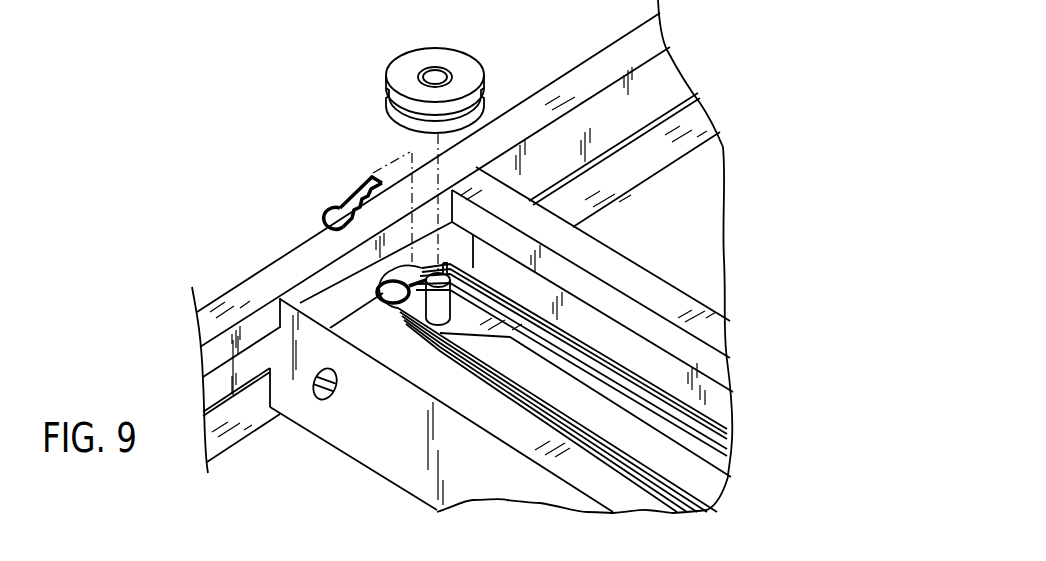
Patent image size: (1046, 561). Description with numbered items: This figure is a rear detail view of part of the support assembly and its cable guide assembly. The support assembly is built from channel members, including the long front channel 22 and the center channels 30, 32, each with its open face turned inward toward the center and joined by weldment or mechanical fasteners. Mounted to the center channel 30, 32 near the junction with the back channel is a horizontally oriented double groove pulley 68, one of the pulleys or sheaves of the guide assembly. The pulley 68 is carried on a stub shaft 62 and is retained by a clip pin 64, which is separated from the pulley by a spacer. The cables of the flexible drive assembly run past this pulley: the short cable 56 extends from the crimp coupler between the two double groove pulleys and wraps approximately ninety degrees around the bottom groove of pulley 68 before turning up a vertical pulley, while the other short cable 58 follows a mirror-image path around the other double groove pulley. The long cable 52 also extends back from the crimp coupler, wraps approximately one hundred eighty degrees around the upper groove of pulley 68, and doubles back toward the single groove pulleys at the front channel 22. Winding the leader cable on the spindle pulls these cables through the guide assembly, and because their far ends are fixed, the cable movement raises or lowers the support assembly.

The front channel 22 is at (238, 287).
The center channel 30 is at (623, 275).
The center channel 32 is at (345, 425).
The long cable 52 is at (603, 360).
The short cable 56 is at (617, 153).
The short cable 58 is at (240, 400).
The stub shaft 62 is at (478, 278).
The clip pin 64 is at (323, 205).
The double groove pulley 68 is at (465, 65).